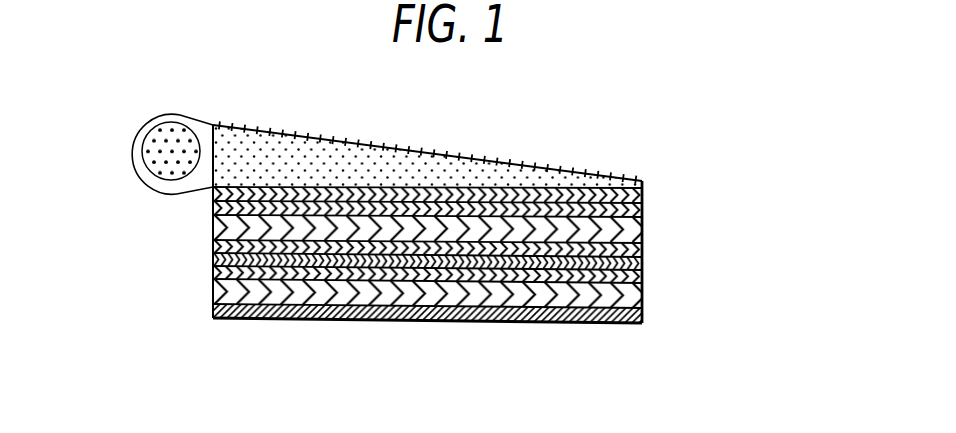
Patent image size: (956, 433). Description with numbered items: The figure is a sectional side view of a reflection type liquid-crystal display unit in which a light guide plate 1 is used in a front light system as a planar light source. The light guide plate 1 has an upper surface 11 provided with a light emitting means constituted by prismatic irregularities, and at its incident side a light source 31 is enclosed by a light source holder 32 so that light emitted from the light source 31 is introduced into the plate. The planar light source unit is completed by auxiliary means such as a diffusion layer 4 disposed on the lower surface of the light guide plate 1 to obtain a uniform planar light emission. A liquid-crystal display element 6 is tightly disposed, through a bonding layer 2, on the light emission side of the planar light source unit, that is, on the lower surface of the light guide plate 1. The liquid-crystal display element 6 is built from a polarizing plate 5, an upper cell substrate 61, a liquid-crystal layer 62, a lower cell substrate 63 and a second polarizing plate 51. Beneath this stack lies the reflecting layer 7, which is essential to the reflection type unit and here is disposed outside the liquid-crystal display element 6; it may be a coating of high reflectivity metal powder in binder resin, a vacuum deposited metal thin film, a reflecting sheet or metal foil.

The light guide plate 1 is at (322, 165).
The upper surface 11 is at (476, 158).
The bonding layer 2 is at (642, 195).
The diffusion layer 4 is at (642, 211).
The polarizing plate 5 is at (642, 233).
The polarizing plate 51 is at (642, 297).
The liquid-crystal display element 6 is at (508, 281).
The cell substrate 61 is at (642, 250).
The liquid-crystal layer 62 is at (642, 274).
The cell substrate 63 is at (738, 252).
The reflecting layer 7 is at (642, 315).
The light source 31 is at (148, 134).
The light source holder 32 is at (140, 178).